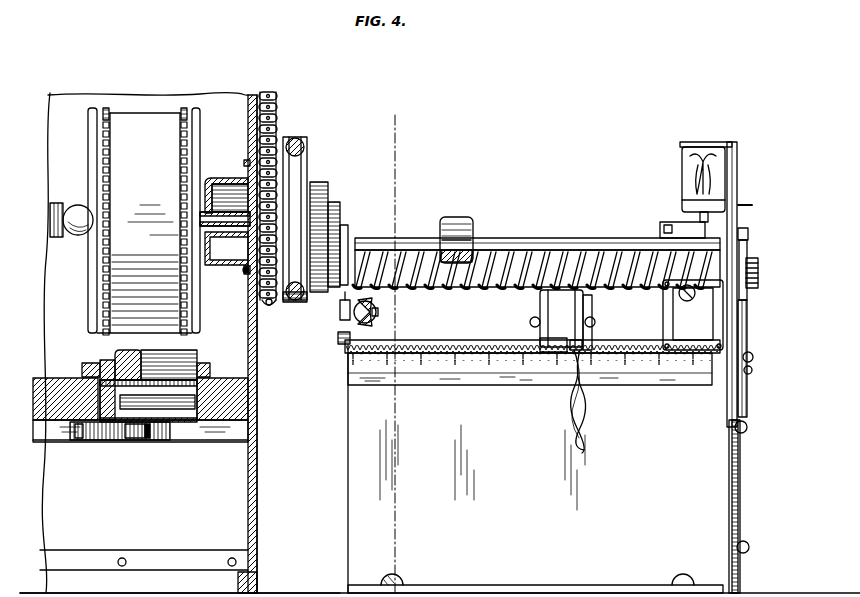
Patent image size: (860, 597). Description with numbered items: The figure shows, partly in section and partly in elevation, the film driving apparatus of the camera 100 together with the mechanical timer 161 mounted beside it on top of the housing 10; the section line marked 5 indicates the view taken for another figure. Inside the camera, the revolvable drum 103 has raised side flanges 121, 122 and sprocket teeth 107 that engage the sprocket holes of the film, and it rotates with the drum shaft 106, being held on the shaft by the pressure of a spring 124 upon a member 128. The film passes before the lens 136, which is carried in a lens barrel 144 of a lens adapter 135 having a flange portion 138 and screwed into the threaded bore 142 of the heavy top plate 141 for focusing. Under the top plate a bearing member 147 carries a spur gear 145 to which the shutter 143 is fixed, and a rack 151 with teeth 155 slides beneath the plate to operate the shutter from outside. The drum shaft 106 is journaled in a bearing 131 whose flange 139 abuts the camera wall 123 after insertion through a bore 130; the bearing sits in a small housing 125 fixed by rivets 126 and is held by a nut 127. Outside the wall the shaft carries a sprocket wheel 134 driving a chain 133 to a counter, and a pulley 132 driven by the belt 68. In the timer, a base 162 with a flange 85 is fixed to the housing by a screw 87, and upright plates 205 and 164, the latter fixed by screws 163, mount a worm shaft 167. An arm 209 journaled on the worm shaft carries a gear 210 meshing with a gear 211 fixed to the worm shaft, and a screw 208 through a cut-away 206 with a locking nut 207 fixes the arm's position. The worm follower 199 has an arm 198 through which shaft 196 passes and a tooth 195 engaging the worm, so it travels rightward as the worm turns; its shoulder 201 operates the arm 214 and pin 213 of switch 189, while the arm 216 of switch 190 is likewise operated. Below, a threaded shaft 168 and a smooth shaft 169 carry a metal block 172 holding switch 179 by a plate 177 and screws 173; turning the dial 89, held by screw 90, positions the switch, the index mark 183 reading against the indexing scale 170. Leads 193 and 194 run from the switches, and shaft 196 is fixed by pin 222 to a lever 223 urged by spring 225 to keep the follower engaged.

The housing 10 is at (320, 590).
The belt 68 is at (297, 138).
The flange 85 is at (535, 585).
The screw 87 is at (396, 578).
The dial 89 is at (748, 392).
The screw 90 is at (754, 357).
The camera 100 is at (252, 94).
The revolvable drum 103 is at (116, 150).
The drum shaft 106 is at (218, 210).
The sprocket teeth 107 is at (182, 112).
The raised side flange 121 is at (92, 106).
The raised side flange 122 is at (196, 106).
The camera wall 123 is at (258, 360).
The spring 124 is at (56, 203).
The small housing 125 is at (240, 270).
The rivets 126 is at (246, 160).
The nut 127 is at (206, 198).
The member 128 is at (84, 238).
The bore 130 is at (270, 306).
The bearing 131 is at (204, 216).
The pulley 132 is at (308, 142).
The chain 133 is at (276, 98).
The sprocket wheel 134 is at (292, 300).
The lens adapter 135 is at (196, 372).
The lens 136 is at (128, 358).
The flange portion 138 is at (208, 368).
The flange 139 is at (247, 234).
The top plate 141 is at (55, 385).
The threaded bore 142 is at (100, 383).
The shutter 143 is at (180, 441).
The lens barrel 144 is at (110, 362).
The spur gear 145 is at (133, 441).
The bearing member 147 is at (150, 441).
The rack 151 is at (92, 441).
The teeth 155 is at (72, 441).
The mechanical timer 161 is at (742, 461).
The base 162 is at (355, 470).
The screws 163 is at (748, 428).
The upright plate 164 is at (742, 496).
The worm shaft 167 is at (548, 252).
The threaded shaft 168 is at (462, 342).
The shaft 169 is at (394, 348).
The indexing scale 170 is at (520, 386).
The metal block 172 is at (540, 345).
The screws 173 is at (594, 322).
The plate 177 is at (584, 342).
The switch 179 is at (538, 300).
The index mark 183 is at (562, 356).
The switch 189 is at (684, 186).
The switch 190 is at (700, 311).
The leads 193 is at (715, 152).
The leads 194 is at (583, 407).
The tooth 195 is at (452, 248).
The shaft 196 is at (506, 238).
The arm 198 is at (476, 230).
The worm follower 199 is at (448, 222).
The shoulder 201 is at (463, 218).
The upright plate 205 is at (338, 340).
The cut-away 206 is at (341, 308).
The locking nut 207 is at (373, 303).
The screw 208 is at (378, 314).
The arm 209 is at (337, 205).
The gear 210 is at (322, 184).
The gear 211 is at (342, 262).
The pin 213 is at (730, 207).
The arm 214 is at (690, 222).
The arm 216 is at (678, 299).
The pin 222 is at (748, 230).
The lever 223 is at (749, 250).
The spring 225 is at (760, 270).
The section line 5 is at (412, 127).